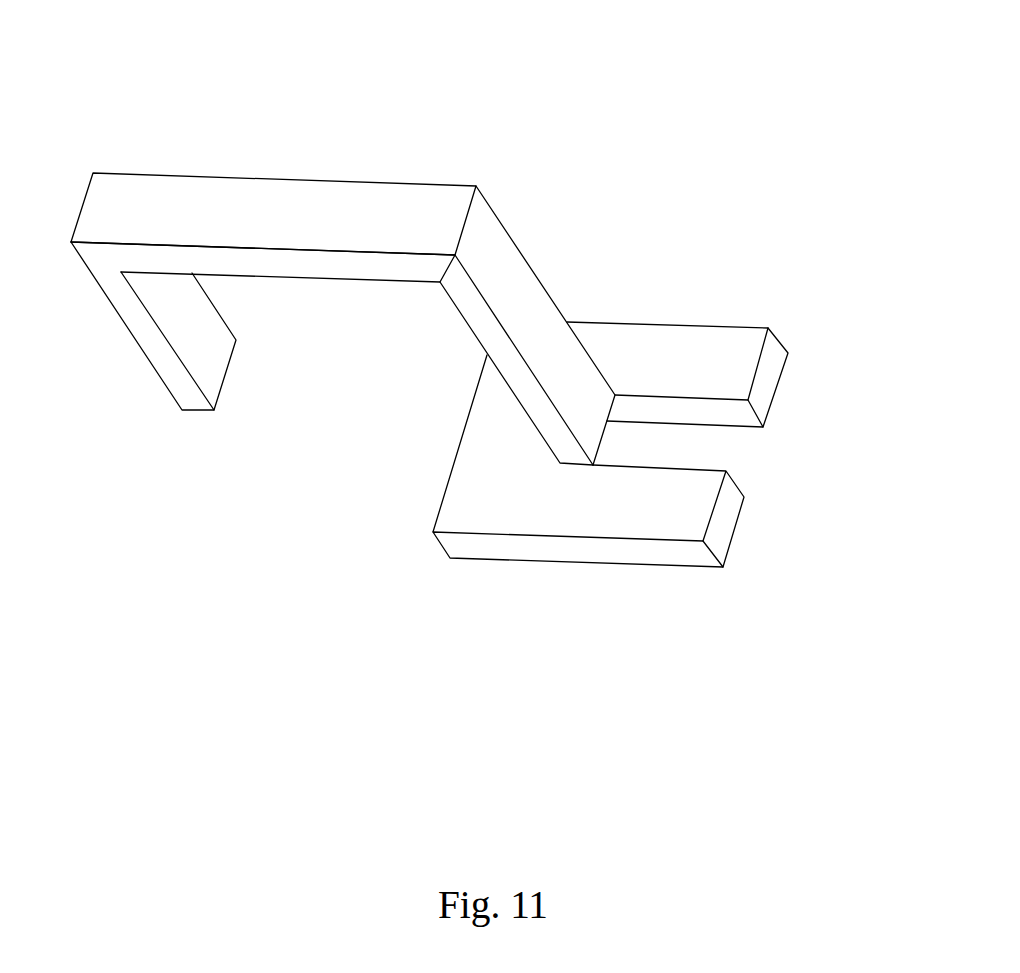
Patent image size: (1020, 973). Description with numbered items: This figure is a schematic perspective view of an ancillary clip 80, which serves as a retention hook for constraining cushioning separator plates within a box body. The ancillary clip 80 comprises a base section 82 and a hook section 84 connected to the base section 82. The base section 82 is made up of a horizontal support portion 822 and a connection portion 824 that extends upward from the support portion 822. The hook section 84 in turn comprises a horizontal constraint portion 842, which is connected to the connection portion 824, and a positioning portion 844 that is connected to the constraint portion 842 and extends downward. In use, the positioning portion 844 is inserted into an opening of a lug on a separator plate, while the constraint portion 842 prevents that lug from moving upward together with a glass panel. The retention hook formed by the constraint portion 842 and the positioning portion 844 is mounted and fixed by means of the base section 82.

The ancillary clip 80 is at (640, 169).
The base section 82 is at (768, 700).
The support portion 822 is at (633, 512).
The connection portion 824 is at (513, 373).
The hook section 84 is at (300, 697).
The constraint portion 842 is at (307, 234).
The positioning portion 844 is at (153, 342).